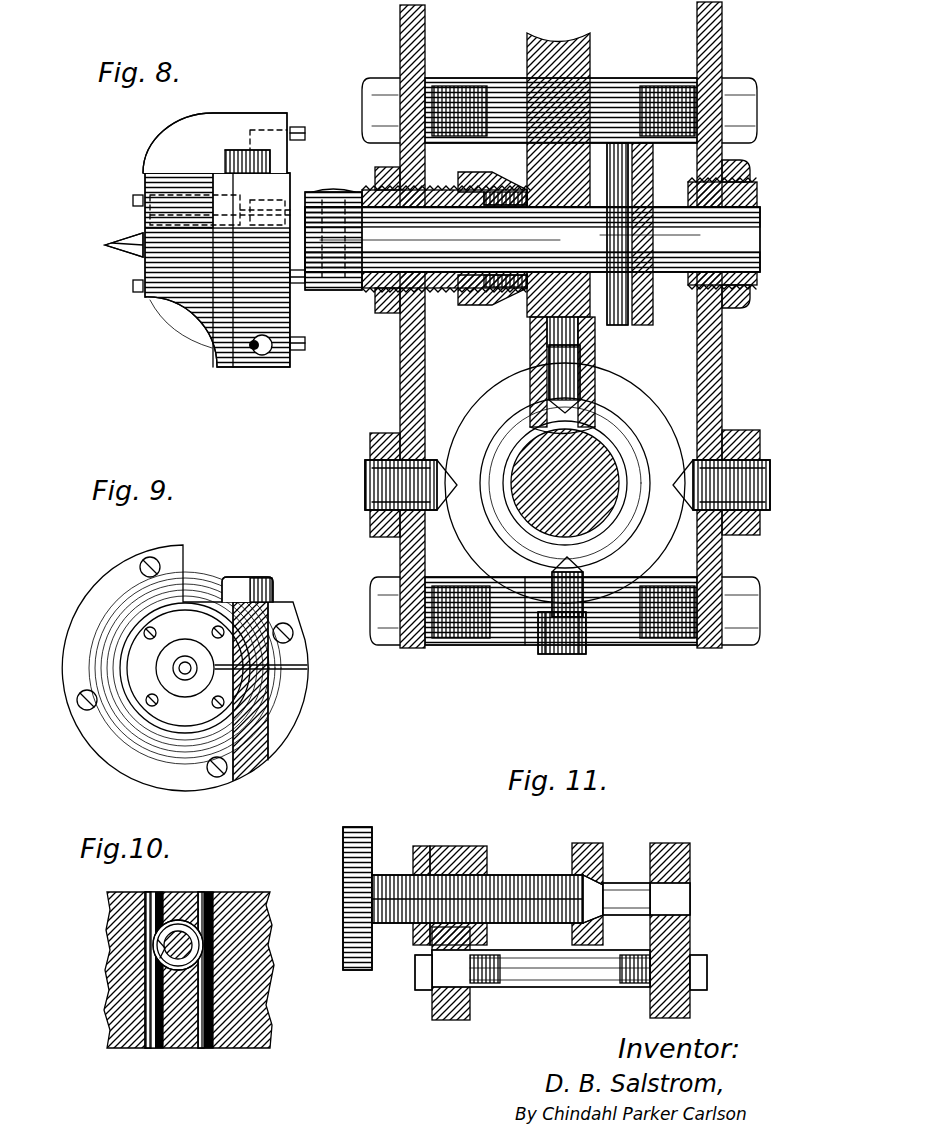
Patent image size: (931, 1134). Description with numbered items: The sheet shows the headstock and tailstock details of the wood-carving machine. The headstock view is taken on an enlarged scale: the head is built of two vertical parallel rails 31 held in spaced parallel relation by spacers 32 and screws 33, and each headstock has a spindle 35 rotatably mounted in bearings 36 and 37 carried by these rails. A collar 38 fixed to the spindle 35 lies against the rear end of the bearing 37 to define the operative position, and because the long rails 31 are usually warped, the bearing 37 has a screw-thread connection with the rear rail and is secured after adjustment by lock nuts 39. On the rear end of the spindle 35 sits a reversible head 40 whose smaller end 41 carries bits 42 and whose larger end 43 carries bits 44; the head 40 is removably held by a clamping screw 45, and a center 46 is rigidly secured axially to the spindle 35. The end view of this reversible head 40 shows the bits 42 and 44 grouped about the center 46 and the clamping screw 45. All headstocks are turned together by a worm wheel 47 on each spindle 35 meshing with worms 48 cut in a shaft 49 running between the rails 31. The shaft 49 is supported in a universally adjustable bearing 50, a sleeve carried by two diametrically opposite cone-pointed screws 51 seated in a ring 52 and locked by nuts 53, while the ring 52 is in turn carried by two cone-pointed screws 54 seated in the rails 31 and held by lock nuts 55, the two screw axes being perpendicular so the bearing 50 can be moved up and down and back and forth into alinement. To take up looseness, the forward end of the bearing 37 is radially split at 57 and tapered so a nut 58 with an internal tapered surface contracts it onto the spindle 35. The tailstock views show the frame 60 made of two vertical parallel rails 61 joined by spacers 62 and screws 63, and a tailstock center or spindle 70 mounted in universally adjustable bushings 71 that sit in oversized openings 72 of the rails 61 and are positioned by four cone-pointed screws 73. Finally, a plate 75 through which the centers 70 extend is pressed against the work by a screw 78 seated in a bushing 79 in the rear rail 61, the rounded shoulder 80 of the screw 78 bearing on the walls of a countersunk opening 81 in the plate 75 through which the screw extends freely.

In FIG. 8, the rails 31 is at (400, 33).
In FIG. 8, the spacers 32 is at (630, 78).
In FIG. 8, the screws 33 is at (372, 88).
In FIG. 8, the spindle 35 is at (752, 230).
In FIG. 8, the bearing 36 is at (757, 190).
In FIG. 8, the bearing 37 is at (372, 292).
In FIG. 8, the collar 38 is at (350, 292).
In FIG. 8, the lock nuts 39 is at (388, 313).
In FIG. 8, the reversible head 40 is at (228, 367).
In FIG. 8, the smaller end 41 is at (160, 312).
In FIG. 8, the bits 42 is at (133, 200).
In FIG. 9, the bits 42 is at (212, 630).
In FIG. 8, the larger end 43 is at (290, 365).
In FIG. 8, the bits 44 is at (305, 134).
In FIG. 9, the bits 44 is at (293, 637).
In FIG. 8, the clamping screw 45 is at (232, 152).
In FIG. 9, the clamping screw 45 is at (262, 602).
In FIG. 8, the center 46 is at (115, 248).
In FIG. 9, the center 46 is at (185, 662).
In FIG. 8, the worm wheel 47 is at (590, 40).
In FIG. 8, the worms 48 is at (600, 437).
In FIG. 8, the shaft 49 is at (545, 515).
In FIG. 8, the universally adjustable bearing 50 is at (618, 440).
In FIG. 8, the cone-pointed screws 51 is at (528, 395).
In FIG. 8, the ring 52 is at (522, 597).
In FIG. 8, the nuts 53 is at (595, 340).
In FIG. 8, the cone-pointed screws 54 is at (433, 468).
In FIG. 8, the lock nuts 55 is at (378, 433).
In FIG. 8, the radial split 57 is at (503, 207).
In FIG. 8, the nut 58 is at (490, 305).
In FIG. 11, the frame 60 is at (688, 924).
In FIG. 10, the rails 61 is at (250, 1000).
In FIG. 11, the rails 61 is at (440, 1005).
In FIG. 11, the spacers 62 is at (618, 883).
In FIG. 11, the screws 63 is at (415, 985).
In FIG. 10, the center or spindle 70 is at (170, 945).
In FIG. 10, the universally adjustable bushings 71 is at (178, 920).
In FIG. 10, the openings 72 is at (158, 953).
In FIG. 10, the cone-pointed screws 73 is at (152, 892).
In FIG. 11, the plate 75 is at (578, 843).
In FIG. 11, the screw 78 is at (522, 875).
In FIG. 11, the bushing 79 is at (455, 846).
In FIG. 11, the rounded shoulder 80 is at (595, 843).
In FIG. 11, the countersunk opening 81 is at (580, 920).